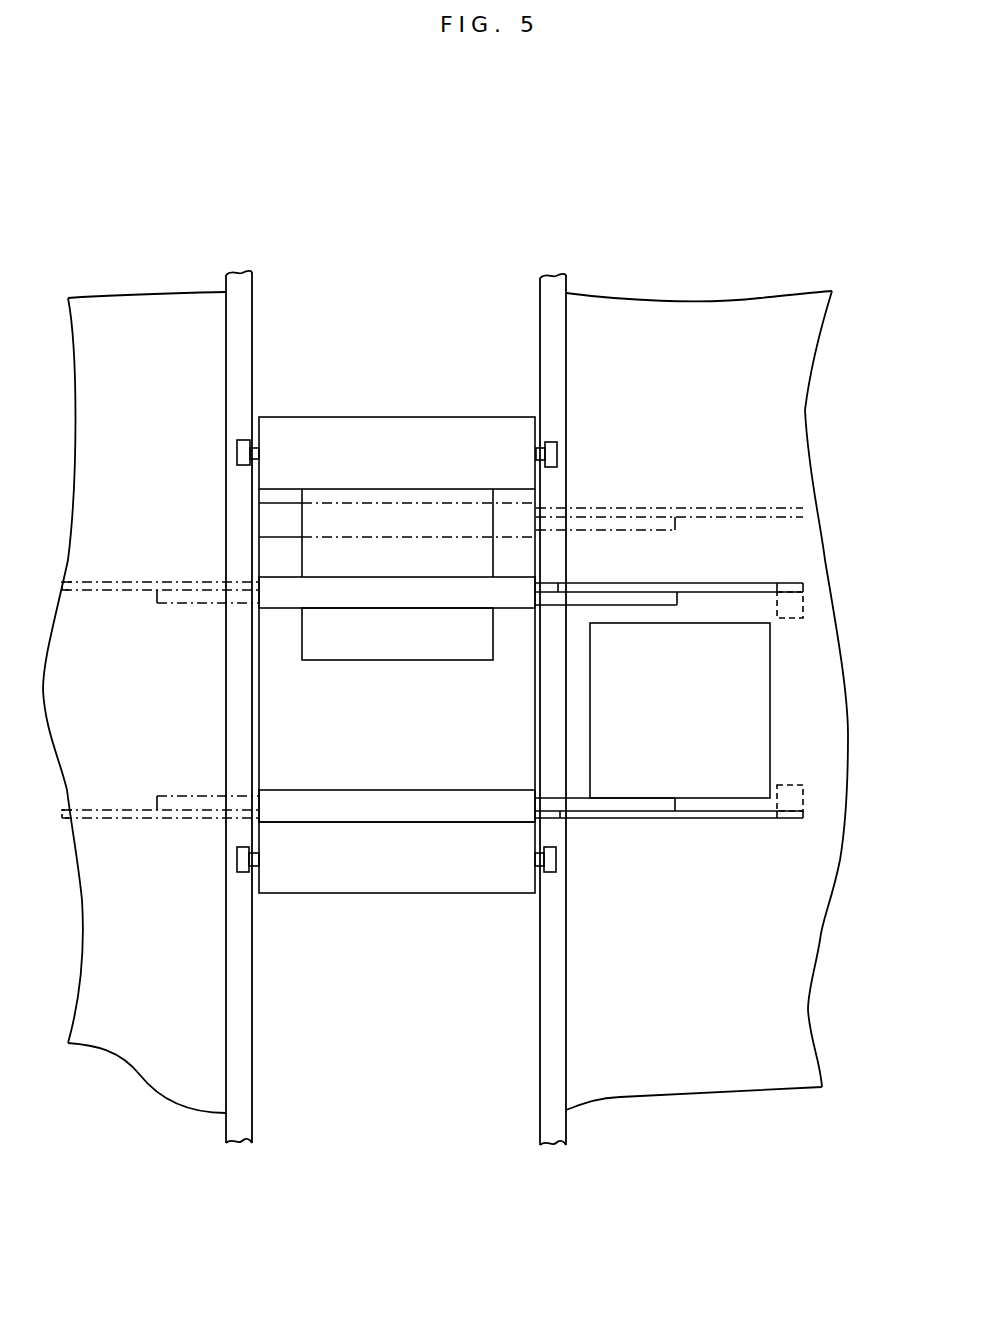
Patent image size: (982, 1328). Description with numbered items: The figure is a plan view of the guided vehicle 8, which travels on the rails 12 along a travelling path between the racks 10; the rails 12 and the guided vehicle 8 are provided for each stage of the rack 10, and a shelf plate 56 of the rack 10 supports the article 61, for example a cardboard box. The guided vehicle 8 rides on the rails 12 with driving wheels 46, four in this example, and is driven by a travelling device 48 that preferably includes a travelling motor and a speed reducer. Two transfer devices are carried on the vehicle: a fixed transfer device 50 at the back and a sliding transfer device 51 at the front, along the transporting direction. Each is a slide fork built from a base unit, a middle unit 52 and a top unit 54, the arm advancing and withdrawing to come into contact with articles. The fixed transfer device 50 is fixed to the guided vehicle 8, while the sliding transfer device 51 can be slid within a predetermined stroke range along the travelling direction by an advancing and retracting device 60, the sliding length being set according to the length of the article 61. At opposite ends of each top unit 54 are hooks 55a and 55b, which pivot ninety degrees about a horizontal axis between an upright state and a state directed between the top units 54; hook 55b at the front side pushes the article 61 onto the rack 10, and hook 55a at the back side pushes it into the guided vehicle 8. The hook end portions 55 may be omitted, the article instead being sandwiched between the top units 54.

The guided vehicle 8 is at (512, 716).
The rack 10 is at (160, 1236).
The rail 12 is at (230, 975).
The driving wheel 46 is at (243, 450).
The travelling device 48 is at (380, 430).
The fixed transfer device 50 is at (283, 603).
The sliding transfer device 51 is at (375, 527).
The middle unit 52 is at (616, 520).
The top unit 54 is at (727, 506).
The arm end portion 55 is at (95, 598).
The hook 55a is at (793, 584).
The hook 55b is at (553, 590).
The shelf plate 56 is at (150, 1085).
The advancing and retracting device 60 is at (410, 647).
The article 61 is at (752, 703).